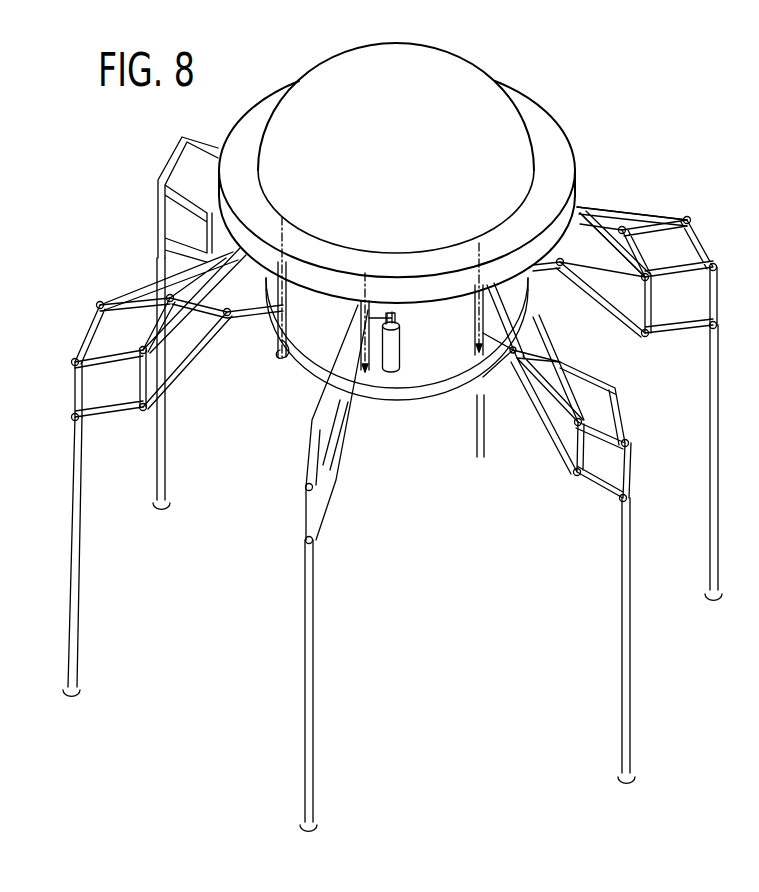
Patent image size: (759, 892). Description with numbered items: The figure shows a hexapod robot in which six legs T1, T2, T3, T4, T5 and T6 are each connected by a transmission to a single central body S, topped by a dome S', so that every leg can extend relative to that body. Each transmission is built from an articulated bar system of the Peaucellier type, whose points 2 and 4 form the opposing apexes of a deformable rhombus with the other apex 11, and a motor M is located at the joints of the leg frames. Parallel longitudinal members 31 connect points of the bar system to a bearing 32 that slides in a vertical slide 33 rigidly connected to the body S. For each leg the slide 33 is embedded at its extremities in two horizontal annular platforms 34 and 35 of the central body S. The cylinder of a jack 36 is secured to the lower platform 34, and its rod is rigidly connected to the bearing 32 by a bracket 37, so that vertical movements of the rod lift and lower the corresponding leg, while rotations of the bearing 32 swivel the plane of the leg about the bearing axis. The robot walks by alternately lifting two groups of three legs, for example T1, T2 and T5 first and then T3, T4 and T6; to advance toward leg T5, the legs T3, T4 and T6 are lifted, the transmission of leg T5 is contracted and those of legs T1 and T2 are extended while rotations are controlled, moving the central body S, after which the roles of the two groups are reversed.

The central body S is at (431, 182).
The spherical dome S' is at (396, 139).
The upper horizontal annular platform 35 is at (570, 188).
The lower horizontal annular platform 34 is at (457, 392).
The bearing 32 is at (283, 265).
The bracket 37 is at (377, 303).
The jack 36 is at (386, 372).
The vertical slide 33 is at (282, 352).
The parallel longitudinal member 31 is at (253, 307).
The motor M is at (178, 290).
The point of the articulated bar system 2 is at (713, 267).
The point of the articulated bar system 4 is at (622, 230).
The apex of the rhombus 11 is at (645, 335).
The leg T1 is at (116, 519).
The leg T2 is at (334, 572).
The leg T3 is at (573, 576).
The leg T4 is at (709, 485).
The leg T5 is at (483, 420).
The leg T6 is at (180, 345).